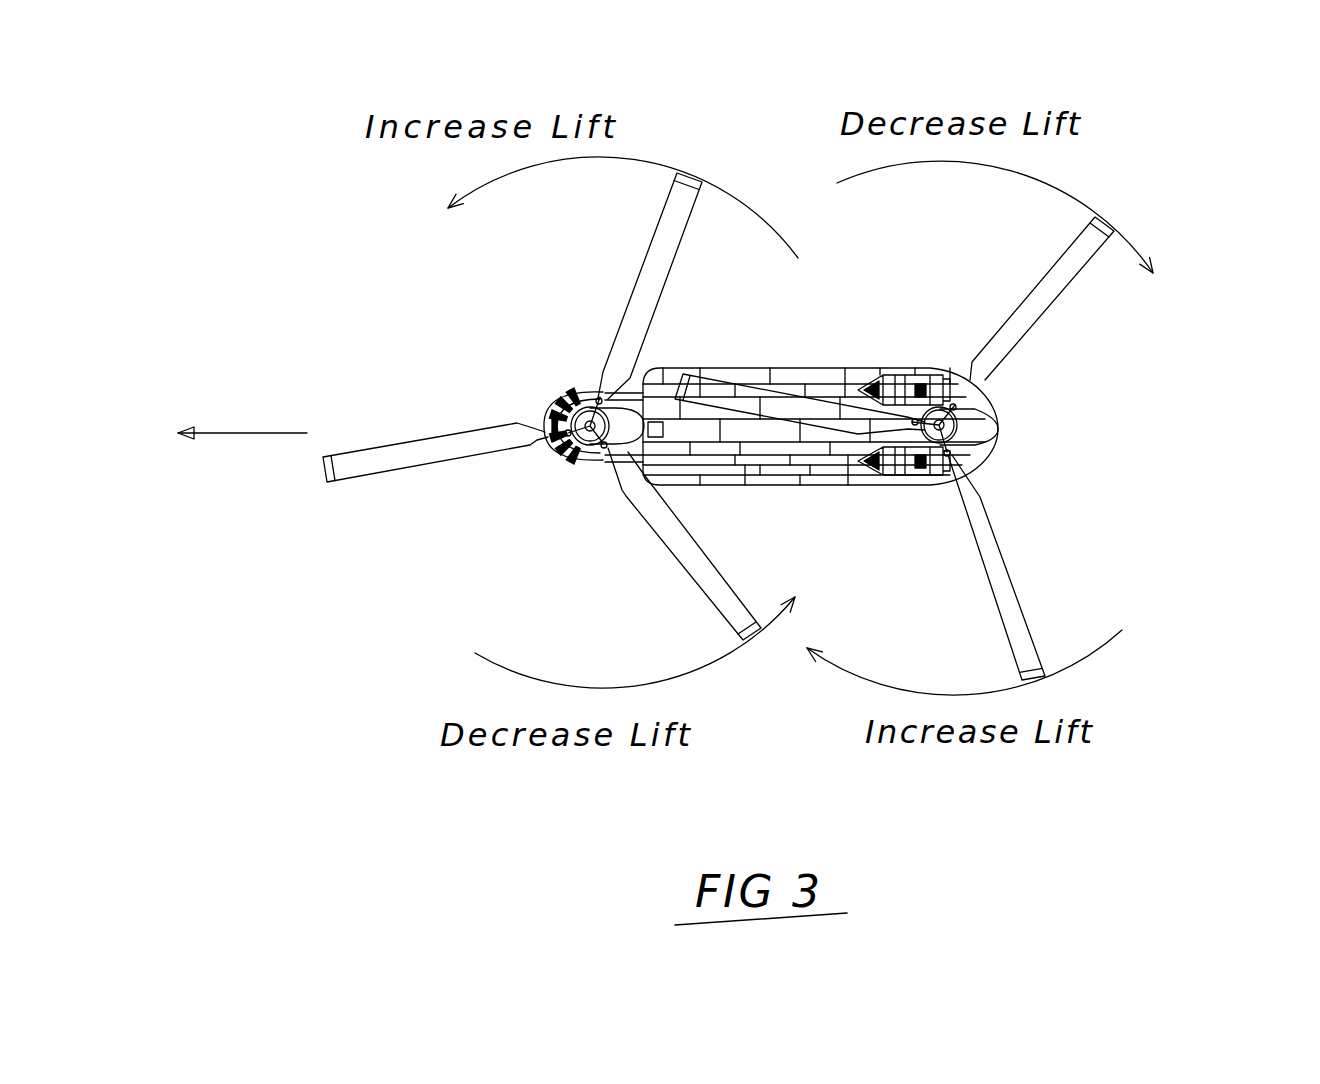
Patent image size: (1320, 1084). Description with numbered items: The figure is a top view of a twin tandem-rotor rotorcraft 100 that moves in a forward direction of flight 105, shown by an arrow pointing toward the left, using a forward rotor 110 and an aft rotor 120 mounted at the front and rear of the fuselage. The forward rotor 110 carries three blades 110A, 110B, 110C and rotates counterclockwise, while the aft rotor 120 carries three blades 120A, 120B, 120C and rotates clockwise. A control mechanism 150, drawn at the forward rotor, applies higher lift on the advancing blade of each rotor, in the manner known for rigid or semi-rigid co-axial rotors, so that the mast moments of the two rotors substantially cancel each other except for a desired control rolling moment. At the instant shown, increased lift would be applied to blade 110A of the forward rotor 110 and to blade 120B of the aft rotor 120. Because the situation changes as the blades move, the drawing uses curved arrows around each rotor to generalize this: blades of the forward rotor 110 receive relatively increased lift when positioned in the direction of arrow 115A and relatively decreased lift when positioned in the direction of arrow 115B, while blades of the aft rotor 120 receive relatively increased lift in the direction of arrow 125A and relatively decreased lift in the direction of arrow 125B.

The twin tandem-rotor rotorcraft 100 is at (855, 325).
The forward direction of flight 105 is at (203, 432).
The forward rotor 110 is at (578, 320).
The blade 110A is at (640, 272).
The blade 110B is at (358, 450).
The blade 110C is at (668, 550).
The arrow 115A is at (508, 178).
The arrow 115B is at (525, 670).
The aft rotor 120 is at (1030, 535).
The blade 120A is at (700, 368).
The blade 120B is at (1020, 605).
The blade 120C is at (1042, 313).
The arrow 125A is at (1097, 650).
The arrow 125B is at (1038, 178).
The control mechanism 150 is at (560, 416).